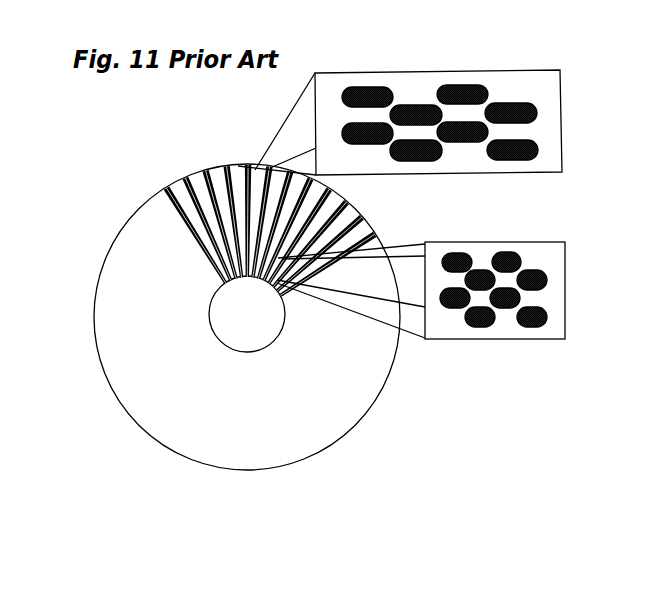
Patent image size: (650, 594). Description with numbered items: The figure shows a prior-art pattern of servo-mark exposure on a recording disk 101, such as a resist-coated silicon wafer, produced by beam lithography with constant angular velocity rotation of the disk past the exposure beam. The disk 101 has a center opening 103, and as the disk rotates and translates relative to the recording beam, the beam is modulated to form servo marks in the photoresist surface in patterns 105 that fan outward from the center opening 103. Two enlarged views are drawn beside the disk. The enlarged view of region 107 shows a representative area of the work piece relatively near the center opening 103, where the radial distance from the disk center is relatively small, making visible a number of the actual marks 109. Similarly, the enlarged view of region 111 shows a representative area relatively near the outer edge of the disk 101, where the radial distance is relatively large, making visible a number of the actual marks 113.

The recording disk 101 is at (105, 258).
The center opening 103 is at (247, 314).
The patterns 105 is at (228, 213).
The region 107 is at (567, 313).
The marks 109 is at (508, 255).
The region 111 is at (562, 100).
The marks 113 is at (475, 89).